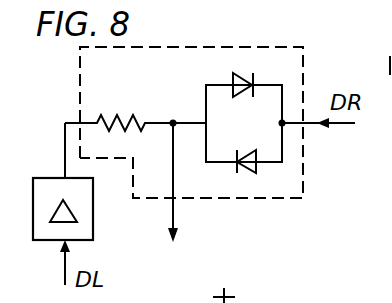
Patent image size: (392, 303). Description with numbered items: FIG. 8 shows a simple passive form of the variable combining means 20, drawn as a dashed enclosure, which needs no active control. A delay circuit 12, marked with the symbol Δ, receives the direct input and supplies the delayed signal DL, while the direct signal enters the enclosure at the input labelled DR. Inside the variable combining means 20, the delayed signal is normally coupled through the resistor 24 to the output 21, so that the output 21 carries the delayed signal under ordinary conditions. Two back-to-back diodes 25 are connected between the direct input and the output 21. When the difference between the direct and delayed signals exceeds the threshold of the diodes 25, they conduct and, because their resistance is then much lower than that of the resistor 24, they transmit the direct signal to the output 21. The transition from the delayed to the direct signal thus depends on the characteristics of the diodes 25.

The delay circuit 12 is at (93, 221).
The variable combining means 20 is at (246, 46).
The output 21 is at (178, 216).
The resistor 24 is at (130, 116).
The back-to-back diodes 25 is at (249, 152).